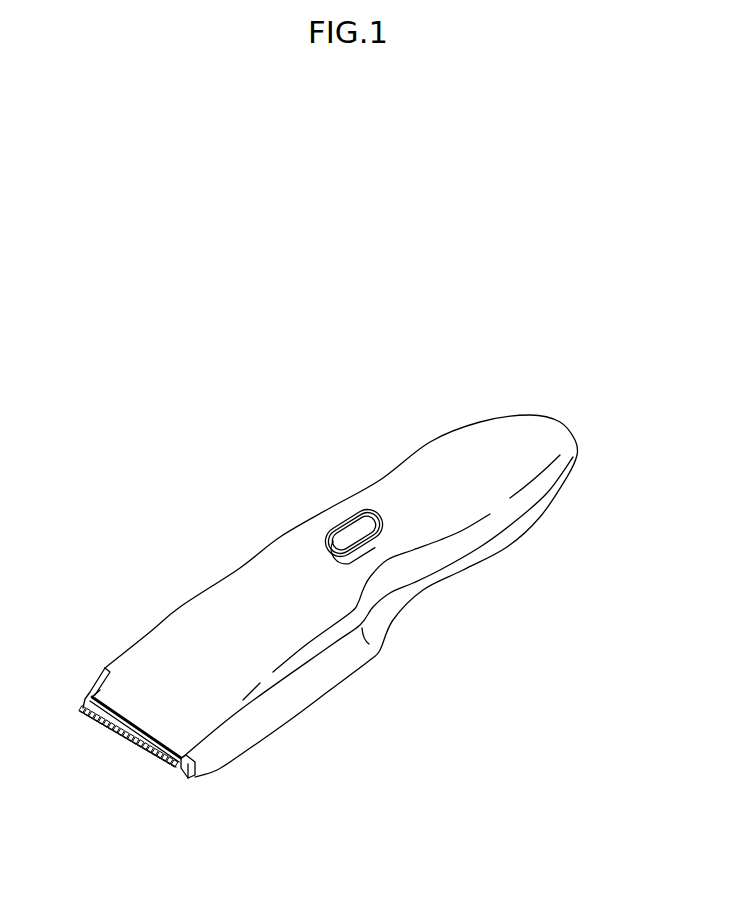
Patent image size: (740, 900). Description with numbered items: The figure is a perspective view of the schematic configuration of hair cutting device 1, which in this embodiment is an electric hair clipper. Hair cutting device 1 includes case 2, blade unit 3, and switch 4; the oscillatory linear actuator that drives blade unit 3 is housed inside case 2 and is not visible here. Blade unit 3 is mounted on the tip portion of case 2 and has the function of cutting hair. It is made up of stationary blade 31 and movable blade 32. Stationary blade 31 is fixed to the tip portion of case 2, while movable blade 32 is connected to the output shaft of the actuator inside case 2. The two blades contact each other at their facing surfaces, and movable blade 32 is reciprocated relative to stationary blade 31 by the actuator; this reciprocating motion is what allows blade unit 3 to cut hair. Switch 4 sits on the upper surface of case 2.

The hair cutting device 1 is at (600, 452).
The case 2 is at (240, 573).
The blade unit 3 is at (70, 745).
The stationary blade 31 is at (177, 766).
The movable blade 32 is at (145, 748).
The switch 4 is at (350, 530).